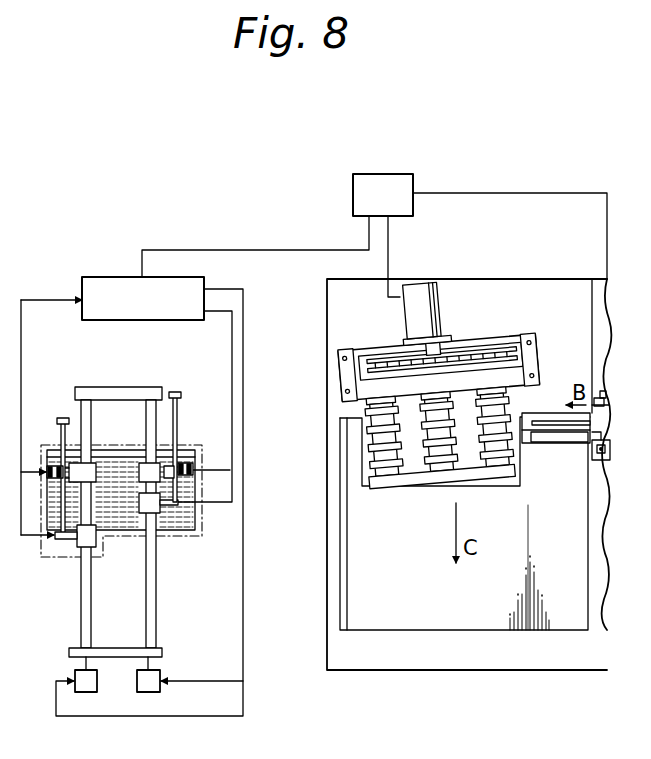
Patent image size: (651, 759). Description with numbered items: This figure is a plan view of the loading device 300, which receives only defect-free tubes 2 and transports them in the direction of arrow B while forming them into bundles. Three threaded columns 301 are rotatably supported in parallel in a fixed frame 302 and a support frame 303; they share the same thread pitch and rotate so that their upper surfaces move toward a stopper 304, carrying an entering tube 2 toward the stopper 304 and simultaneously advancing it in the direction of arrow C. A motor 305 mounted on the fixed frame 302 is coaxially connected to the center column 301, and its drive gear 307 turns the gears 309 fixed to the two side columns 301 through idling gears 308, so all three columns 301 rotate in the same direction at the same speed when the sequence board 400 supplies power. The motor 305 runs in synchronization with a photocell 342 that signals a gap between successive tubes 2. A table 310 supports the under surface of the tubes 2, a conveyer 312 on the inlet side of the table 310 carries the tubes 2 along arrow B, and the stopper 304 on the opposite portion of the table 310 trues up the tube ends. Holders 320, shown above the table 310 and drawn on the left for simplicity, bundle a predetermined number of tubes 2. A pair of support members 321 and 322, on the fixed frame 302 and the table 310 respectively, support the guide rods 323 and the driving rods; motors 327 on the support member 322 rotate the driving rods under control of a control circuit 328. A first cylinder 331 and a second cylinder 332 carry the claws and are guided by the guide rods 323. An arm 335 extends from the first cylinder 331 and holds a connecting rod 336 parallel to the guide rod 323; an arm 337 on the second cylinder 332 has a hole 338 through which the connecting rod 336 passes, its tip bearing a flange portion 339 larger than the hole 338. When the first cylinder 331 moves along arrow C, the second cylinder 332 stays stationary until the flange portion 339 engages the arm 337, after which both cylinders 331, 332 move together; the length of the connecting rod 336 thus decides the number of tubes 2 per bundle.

The tube 2 is at (557, 413).
The loading device 300 is at (375, 678).
The threaded column 301 is at (475, 472).
The fixed frame 302 is at (540, 340).
The support frame 303 is at (500, 478).
The stopper 304 is at (327, 590).
The motor 305 is at (434, 290).
The drive gear 307 is at (446, 344).
The idling gear 308 is at (378, 360).
The gear 309 is at (338, 355).
The table 310 is at (577, 622).
The conveyer 312 is at (535, 420).
The holder 320 is at (64, 560).
The support member 321 is at (122, 387).
The support member 322 is at (163, 652).
The guide rod 323 is at (81, 625).
The motor 327 is at (137, 683).
The control circuit 328 is at (107, 277).
The first cylinder 331 is at (96, 536).
The second cylinder 332 is at (141, 458).
The arm 335 is at (167, 513).
The connecting rod 336 is at (178, 412).
The arm 337 is at (175, 463).
The hole 338 is at (193, 464).
The flange portion 339 is at (175, 388).
The photocell 342 is at (592, 450).
The sequence board 400 is at (412, 170).